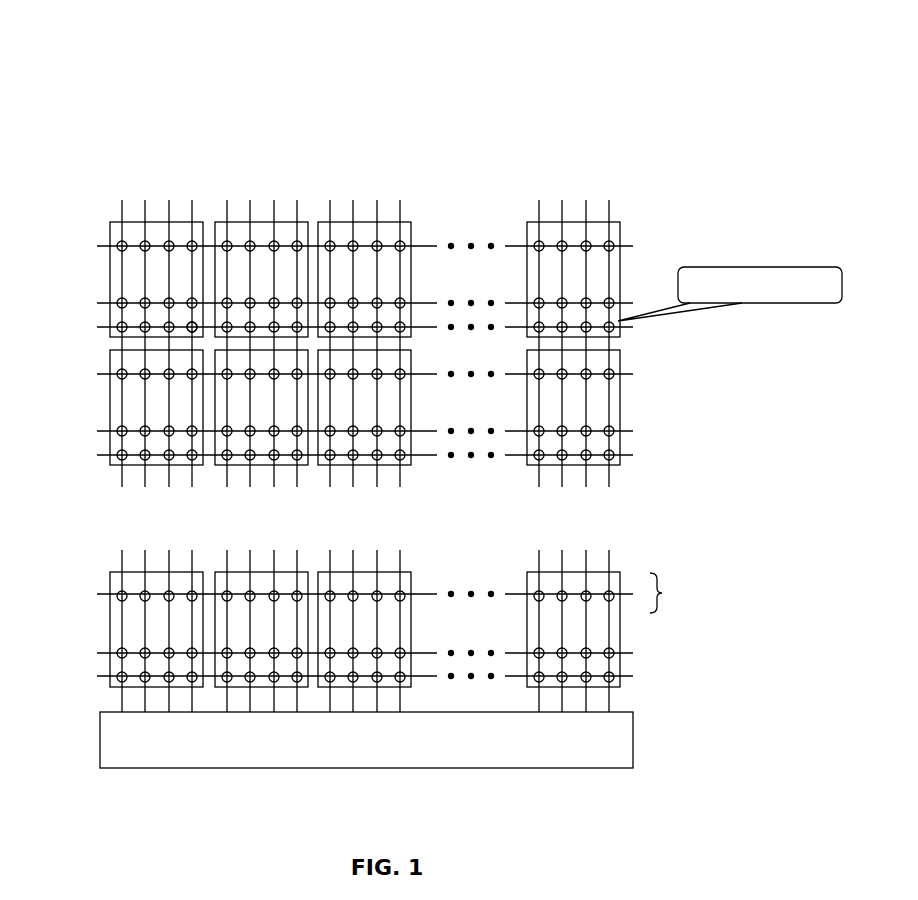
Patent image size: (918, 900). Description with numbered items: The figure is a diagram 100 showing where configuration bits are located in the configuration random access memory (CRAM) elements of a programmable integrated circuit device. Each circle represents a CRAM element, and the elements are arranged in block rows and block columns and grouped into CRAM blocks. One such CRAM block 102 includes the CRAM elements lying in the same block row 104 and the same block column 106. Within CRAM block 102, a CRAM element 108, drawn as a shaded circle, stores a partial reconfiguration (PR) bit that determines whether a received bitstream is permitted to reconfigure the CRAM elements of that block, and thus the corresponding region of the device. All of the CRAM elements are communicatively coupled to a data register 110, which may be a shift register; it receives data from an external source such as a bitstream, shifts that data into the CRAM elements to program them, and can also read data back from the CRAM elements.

The diagram 100 is at (116, 54).
The CRAM block 102 is at (120, 221).
The block row 104 is at (110, 337).
The block column 106 is at (203, 222).
The CRAM element 108 is at (189, 331).
The data register 110 is at (633, 740).